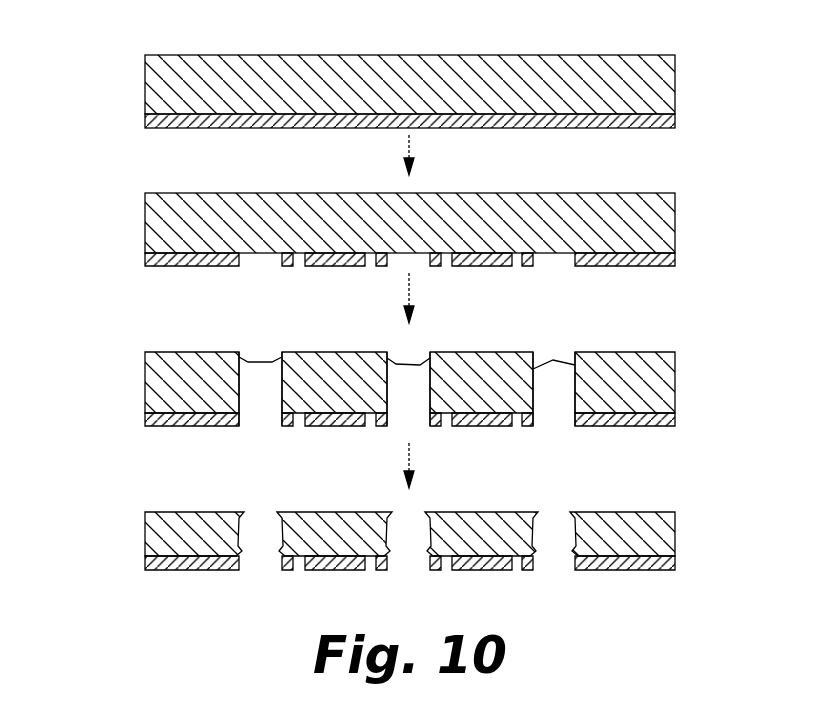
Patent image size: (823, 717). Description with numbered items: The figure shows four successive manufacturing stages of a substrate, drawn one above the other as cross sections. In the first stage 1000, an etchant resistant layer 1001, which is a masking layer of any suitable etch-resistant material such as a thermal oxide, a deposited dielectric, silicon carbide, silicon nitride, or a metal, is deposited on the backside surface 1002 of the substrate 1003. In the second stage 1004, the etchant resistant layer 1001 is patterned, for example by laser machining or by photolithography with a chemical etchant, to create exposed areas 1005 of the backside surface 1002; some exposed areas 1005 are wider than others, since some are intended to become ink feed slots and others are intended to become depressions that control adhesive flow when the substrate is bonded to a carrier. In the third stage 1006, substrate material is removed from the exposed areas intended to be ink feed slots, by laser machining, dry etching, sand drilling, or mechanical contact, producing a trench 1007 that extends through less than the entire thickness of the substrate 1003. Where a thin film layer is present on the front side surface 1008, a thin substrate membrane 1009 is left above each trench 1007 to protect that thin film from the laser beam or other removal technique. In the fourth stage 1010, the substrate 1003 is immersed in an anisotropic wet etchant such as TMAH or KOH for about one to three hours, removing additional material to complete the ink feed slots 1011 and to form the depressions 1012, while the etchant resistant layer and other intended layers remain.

The first stage 1000 is at (389, 83).
The etchant resistant layer 1001 is at (648, 118).
The backside surface 1002 is at (447, 91).
The substrate 1003 is at (586, 66).
The second stage 1004 is at (363, 239).
The exposed areas 1005 is at (260, 267).
The third stage 1006 is at (363, 389).
The trench 1007 is at (281, 395).
The front side surface 1008 is at (300, 352).
The thin substrate membrane 1009 is at (240, 356).
The fourth stage 1010 is at (363, 542).
The ink feed slots 1011 is at (282, 529).
The depressions 1012 is at (298, 557).